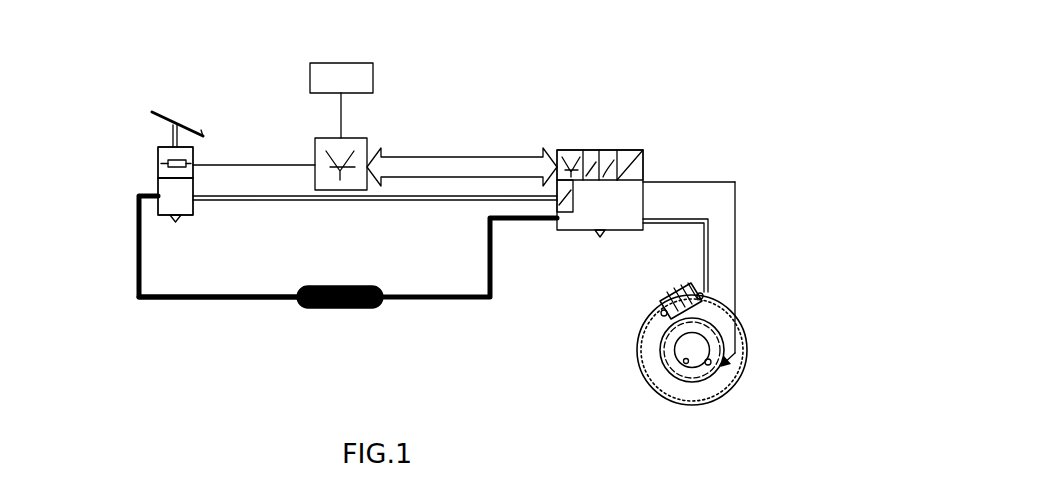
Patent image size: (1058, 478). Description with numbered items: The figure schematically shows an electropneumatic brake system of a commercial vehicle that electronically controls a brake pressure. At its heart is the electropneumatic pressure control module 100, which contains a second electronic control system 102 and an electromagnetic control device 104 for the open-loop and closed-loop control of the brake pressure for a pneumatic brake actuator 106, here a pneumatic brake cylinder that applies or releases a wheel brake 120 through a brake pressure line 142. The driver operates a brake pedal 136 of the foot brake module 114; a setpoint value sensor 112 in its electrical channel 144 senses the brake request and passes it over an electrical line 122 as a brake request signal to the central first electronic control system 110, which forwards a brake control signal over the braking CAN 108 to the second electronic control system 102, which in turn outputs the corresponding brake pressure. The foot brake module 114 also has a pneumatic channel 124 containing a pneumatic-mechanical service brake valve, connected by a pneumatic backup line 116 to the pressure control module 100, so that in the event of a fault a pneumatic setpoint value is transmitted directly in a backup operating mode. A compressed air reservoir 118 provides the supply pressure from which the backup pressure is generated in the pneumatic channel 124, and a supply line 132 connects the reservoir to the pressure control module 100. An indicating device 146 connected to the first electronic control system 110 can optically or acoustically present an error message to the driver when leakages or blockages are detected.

The electropneumatic pressure control module 100 is at (640, 150).
The second electronic control system 102 is at (574, 144).
The electromagnetic control device 104 is at (561, 222).
The brake actuator 106 is at (679, 287).
The braking CAN 108 is at (450, 157).
The first electronic control system 110 is at (335, 145).
The setpoint value sensor 112 is at (158, 172).
The foot brake module 114 is at (214, 134).
The pneumatic backup line 116 is at (278, 198).
The compressed air reservoir 118 is at (380, 307).
The wheel brake 120 is at (655, 332).
The electrical line 122 is at (243, 165).
The pneumatic channel 124 is at (169, 192).
The supply line 132 is at (259, 300).
The brake pedal 136 is at (152, 113).
The brake pressure line 142 is at (709, 247).
The electrical channel 144 is at (158, 145).
The indicating device 146 is at (360, 89).